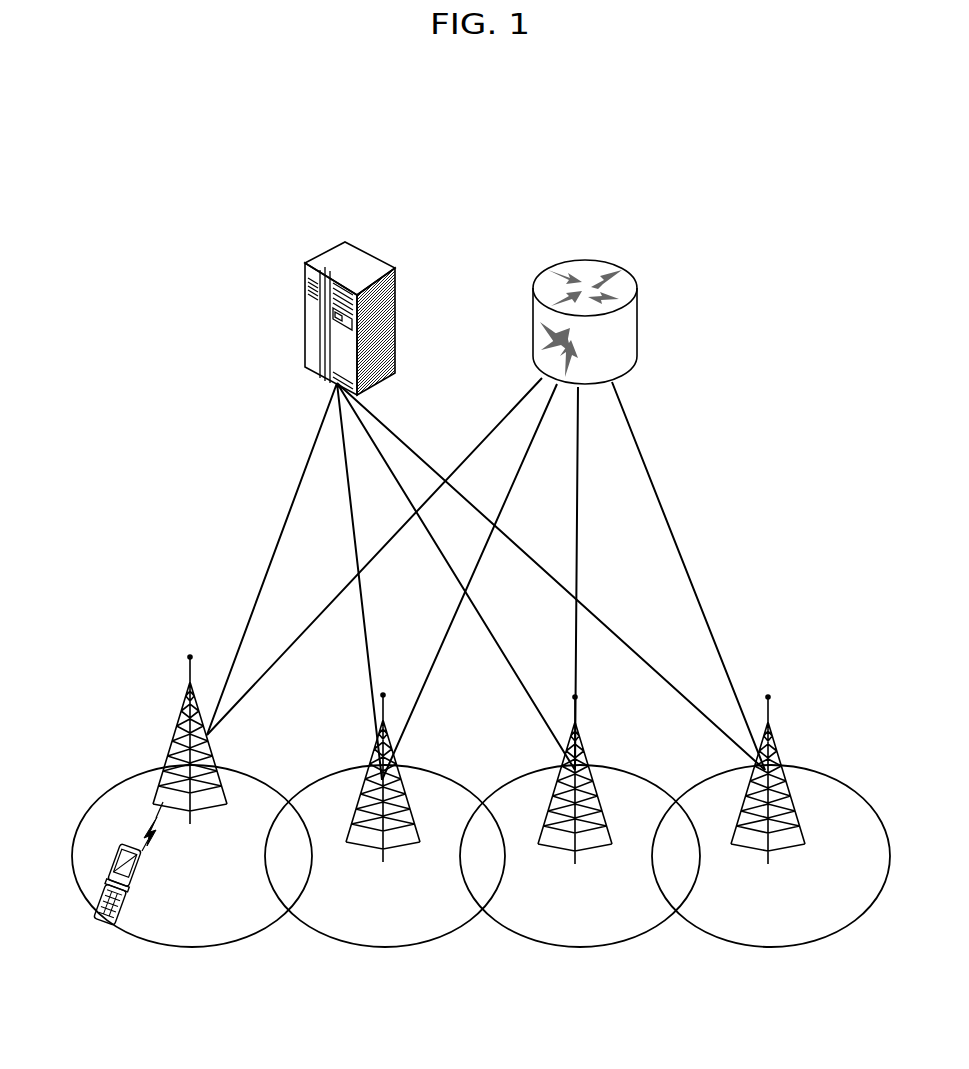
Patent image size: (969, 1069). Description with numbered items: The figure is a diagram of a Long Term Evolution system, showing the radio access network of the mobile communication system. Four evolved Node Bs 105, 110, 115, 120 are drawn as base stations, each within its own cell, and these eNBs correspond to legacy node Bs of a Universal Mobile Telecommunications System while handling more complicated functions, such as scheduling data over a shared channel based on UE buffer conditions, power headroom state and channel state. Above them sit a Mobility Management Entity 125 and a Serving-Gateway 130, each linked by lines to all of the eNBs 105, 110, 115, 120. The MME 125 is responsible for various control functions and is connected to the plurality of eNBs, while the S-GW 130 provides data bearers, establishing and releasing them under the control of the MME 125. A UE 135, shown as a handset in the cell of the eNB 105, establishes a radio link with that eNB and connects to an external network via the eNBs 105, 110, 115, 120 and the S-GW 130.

The evolved Node B 105 is at (178, 720).
The evolved Node B 110 is at (375, 745).
The evolved Node B 115 is at (585, 745).
The evolved Node B 120 is at (777, 742).
The Mobility Management Entity 125 is at (337, 262).
The Serving-Gateway 130 is at (580, 263).
The UE 135 is at (143, 887).